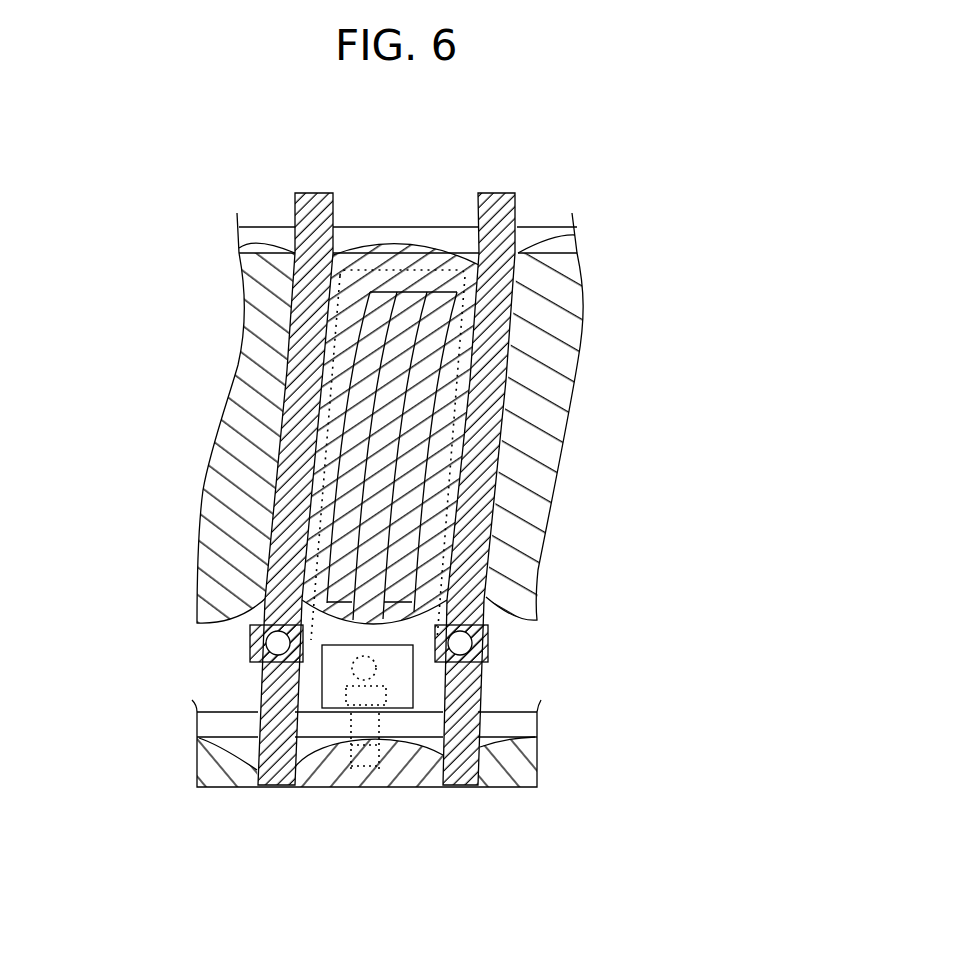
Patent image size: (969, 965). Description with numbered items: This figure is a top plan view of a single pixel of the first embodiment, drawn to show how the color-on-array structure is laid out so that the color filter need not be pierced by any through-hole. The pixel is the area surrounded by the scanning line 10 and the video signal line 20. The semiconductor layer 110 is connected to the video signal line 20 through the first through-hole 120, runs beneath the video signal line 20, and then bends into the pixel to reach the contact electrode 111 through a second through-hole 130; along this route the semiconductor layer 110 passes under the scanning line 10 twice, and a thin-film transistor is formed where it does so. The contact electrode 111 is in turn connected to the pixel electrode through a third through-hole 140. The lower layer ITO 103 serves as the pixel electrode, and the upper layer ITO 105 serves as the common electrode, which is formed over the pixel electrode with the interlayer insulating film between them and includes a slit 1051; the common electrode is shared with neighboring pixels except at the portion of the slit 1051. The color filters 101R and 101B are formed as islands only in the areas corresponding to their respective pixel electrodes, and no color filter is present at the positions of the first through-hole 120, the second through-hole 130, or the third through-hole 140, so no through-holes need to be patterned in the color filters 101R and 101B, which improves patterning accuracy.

The scanning line 10 is at (493, 733).
The video signal line 20 is at (472, 548).
The color filter 101B is at (393, 253).
The color filter 101R is at (243, 424).
The lower layer ITO 103 is at (503, 400).
The upper layer ITO 105 is at (485, 333).
The slit 1051 is at (412, 510).
The semiconductor layer 110 is at (383, 762).
The contact electrode 111 is at (413, 688).
The first through-hole 120 is at (488, 633).
The second through-hole 130 is at (380, 697).
The third through-hole 140 is at (376, 667).